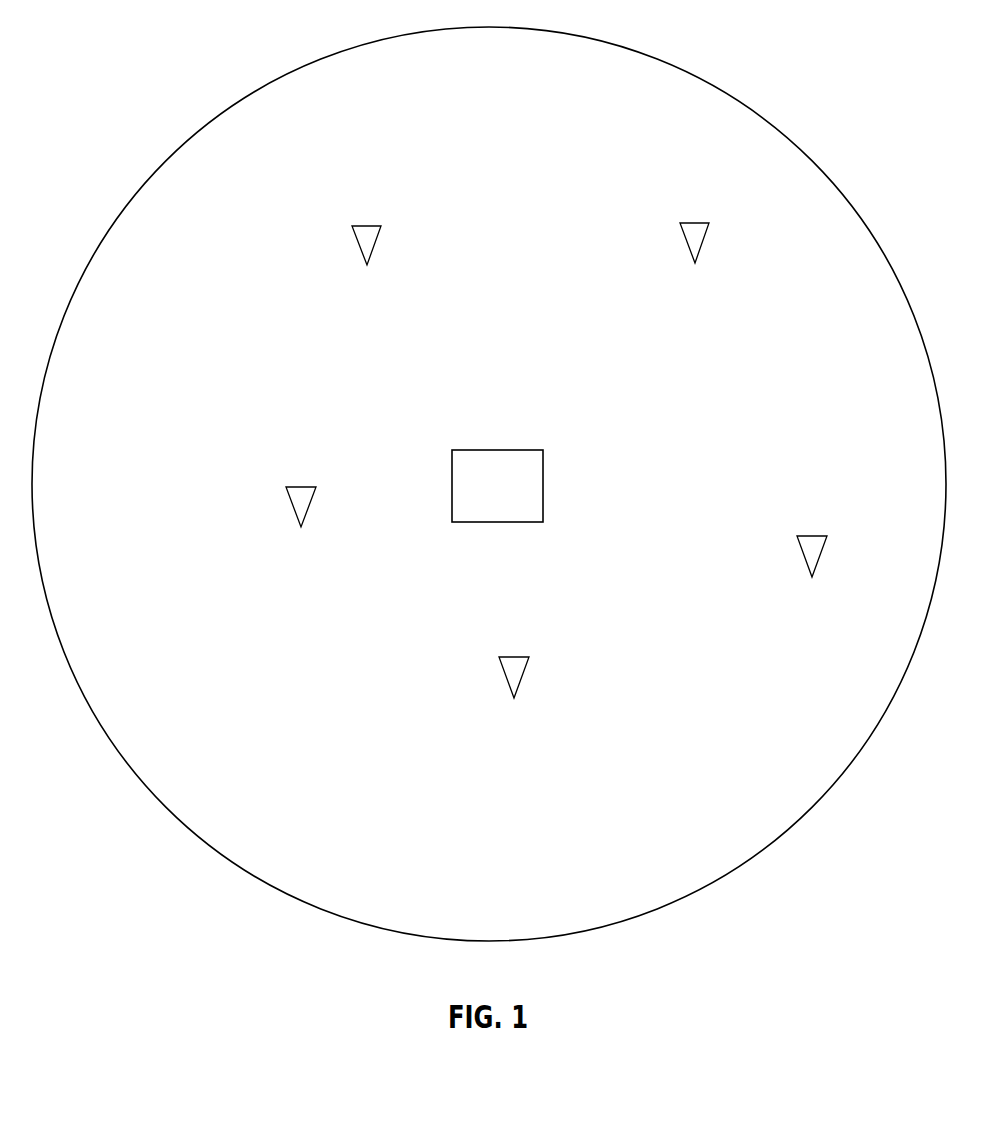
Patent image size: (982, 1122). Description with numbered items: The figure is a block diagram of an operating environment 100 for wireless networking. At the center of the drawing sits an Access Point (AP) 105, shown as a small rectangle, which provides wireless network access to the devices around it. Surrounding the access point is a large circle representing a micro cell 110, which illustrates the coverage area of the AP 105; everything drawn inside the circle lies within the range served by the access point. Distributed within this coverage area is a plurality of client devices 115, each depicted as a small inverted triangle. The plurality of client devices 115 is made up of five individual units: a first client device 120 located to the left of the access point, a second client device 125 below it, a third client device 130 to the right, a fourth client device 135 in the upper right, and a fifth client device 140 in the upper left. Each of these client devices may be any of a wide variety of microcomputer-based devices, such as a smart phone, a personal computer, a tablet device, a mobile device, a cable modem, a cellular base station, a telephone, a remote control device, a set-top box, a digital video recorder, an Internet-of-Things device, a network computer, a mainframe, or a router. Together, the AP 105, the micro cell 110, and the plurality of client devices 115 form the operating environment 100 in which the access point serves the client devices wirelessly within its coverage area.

The operating environment 100 is at (803, 76).
The Access Point (AP) 105 is at (495, 450).
The micro cell 110 is at (823, 173).
The plurality of client devices 115 is at (457, 151).
The first client device 120 is at (296, 508).
The second client device 125 is at (510, 677).
The third client device 130 is at (806, 556).
The fourth client device 135 is at (690, 245).
The fifth client device 140 is at (363, 247).